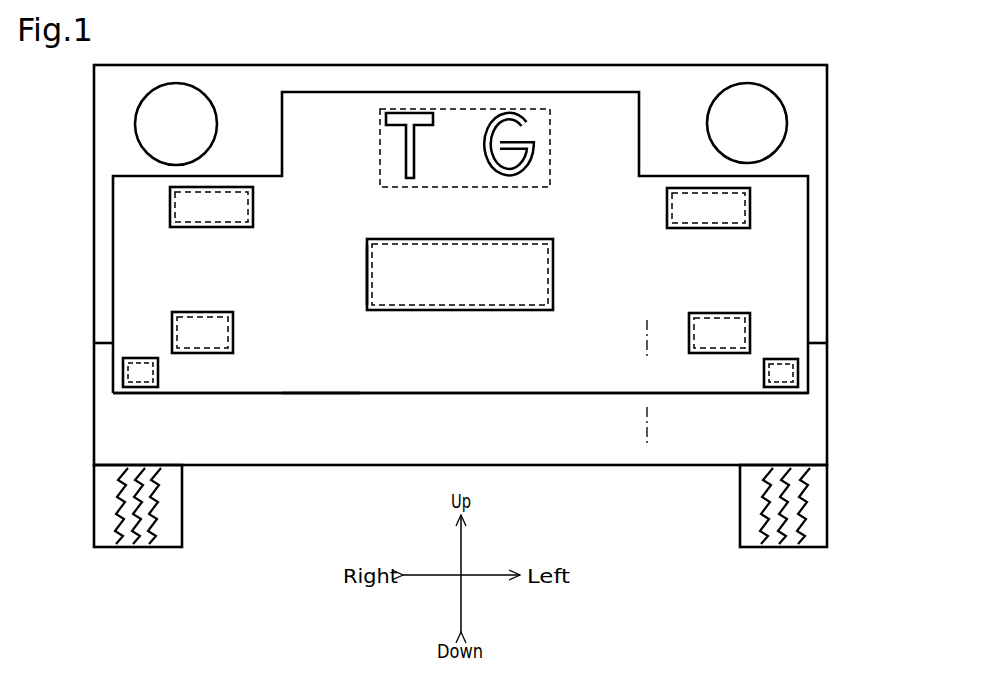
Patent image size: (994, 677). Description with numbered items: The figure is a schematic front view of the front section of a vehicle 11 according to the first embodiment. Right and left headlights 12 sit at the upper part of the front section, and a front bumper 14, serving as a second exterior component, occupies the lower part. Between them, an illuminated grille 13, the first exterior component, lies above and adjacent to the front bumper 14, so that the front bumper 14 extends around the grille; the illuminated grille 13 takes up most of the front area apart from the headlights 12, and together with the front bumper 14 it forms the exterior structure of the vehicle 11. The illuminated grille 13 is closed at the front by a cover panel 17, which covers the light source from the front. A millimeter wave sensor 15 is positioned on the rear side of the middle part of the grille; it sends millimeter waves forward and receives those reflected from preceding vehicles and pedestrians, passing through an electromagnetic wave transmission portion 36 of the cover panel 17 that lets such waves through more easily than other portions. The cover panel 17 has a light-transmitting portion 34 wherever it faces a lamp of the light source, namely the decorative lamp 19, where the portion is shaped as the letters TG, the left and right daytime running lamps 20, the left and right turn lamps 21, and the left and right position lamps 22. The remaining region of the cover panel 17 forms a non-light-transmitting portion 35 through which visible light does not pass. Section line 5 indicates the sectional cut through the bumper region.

The section line 5 is at (647, 320).
The vehicle 11 is at (872, 71).
The headlights 12 is at (780, 122).
The illuminated grille 13 is at (617, 90).
The front bumper 14 is at (807, 420).
The millimeter wave sensor 15 is at (553, 255).
The cover panel 17 is at (318, 340).
The decorative lamp 19 is at (550, 145).
The daytime running lamps 20 is at (693, 229).
The turn lamps 21 is at (713, 353).
The position lamps 22 is at (798, 372).
The light-transmitting portion 34 is at (406, 150).
The non-light-transmitting portion 35 is at (787, 283).
The electromagnetic wave transmission portion 36 is at (367, 272).